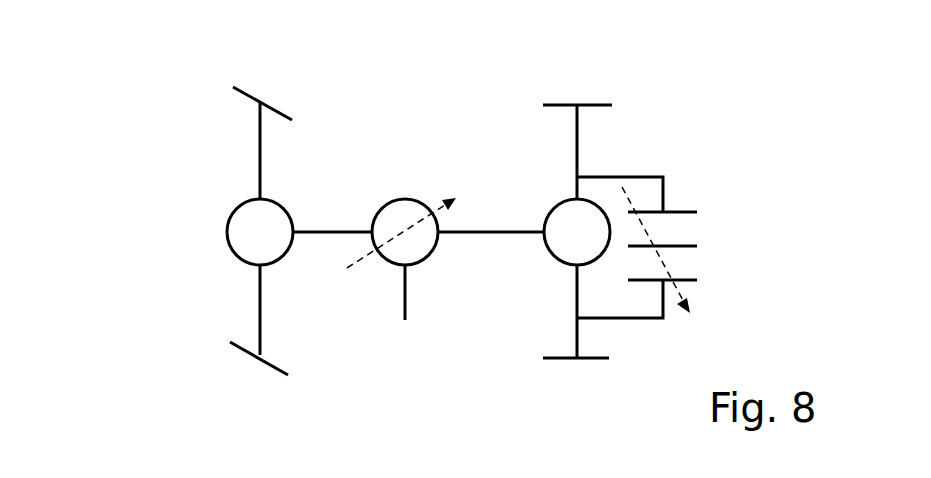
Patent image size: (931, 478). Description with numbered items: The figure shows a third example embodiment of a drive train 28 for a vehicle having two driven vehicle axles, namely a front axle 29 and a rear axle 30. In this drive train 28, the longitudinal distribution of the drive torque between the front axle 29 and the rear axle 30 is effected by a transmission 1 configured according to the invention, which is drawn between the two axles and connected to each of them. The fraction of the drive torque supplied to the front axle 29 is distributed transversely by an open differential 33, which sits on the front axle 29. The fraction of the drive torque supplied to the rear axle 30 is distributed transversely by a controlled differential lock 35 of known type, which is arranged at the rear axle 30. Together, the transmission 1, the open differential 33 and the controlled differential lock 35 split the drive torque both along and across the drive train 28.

The transmission 1 is at (405, 190).
The drive train 28 is at (158, 172).
The front axle 29 is at (252, 137).
The rear axle 30 is at (594, 147).
The open differential 33 is at (220, 241).
The controlled differential lock 35 is at (716, 238).